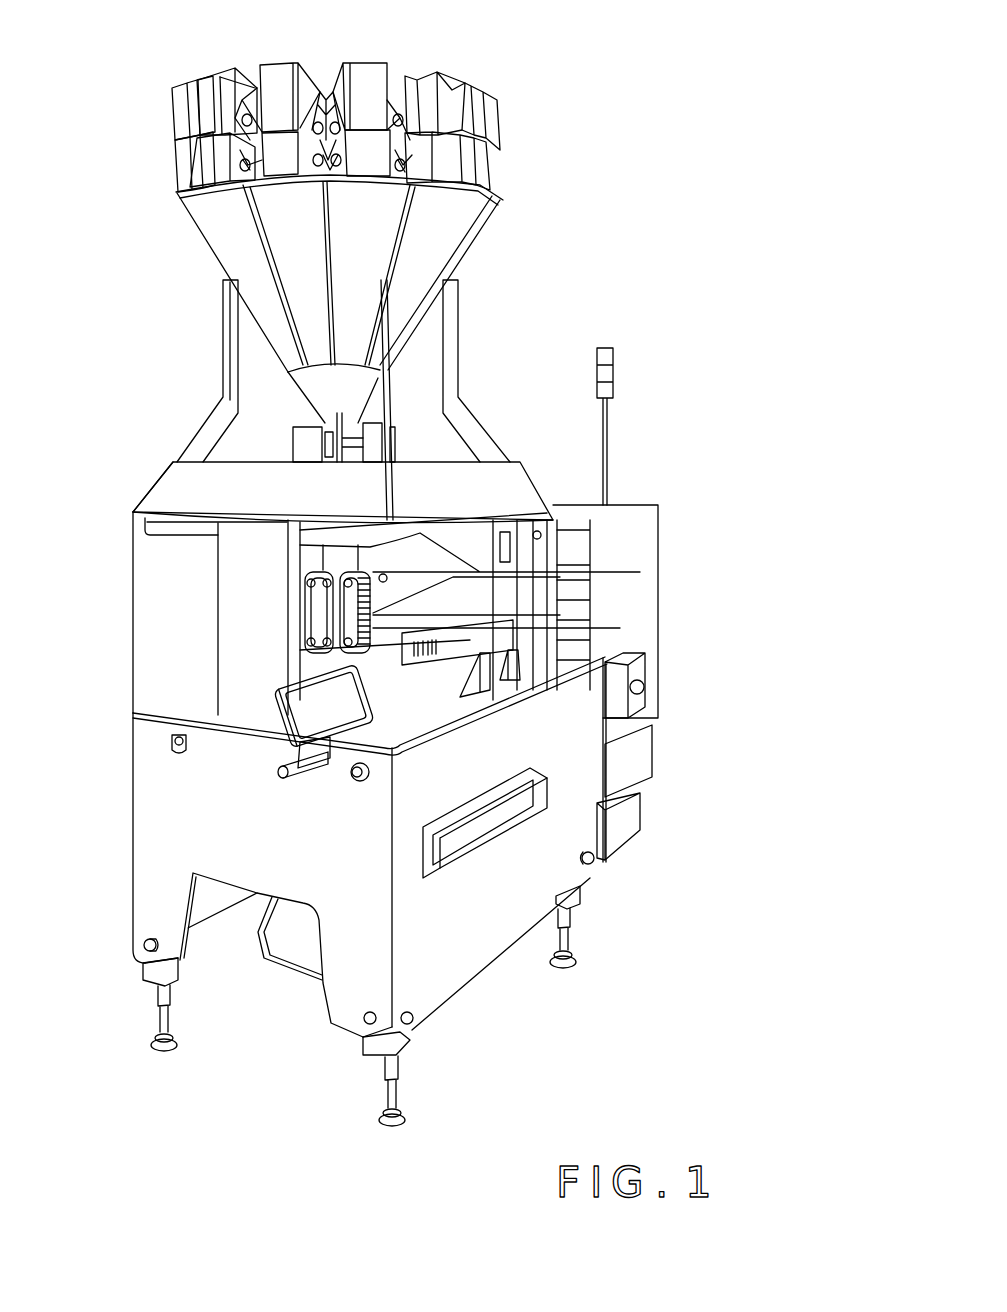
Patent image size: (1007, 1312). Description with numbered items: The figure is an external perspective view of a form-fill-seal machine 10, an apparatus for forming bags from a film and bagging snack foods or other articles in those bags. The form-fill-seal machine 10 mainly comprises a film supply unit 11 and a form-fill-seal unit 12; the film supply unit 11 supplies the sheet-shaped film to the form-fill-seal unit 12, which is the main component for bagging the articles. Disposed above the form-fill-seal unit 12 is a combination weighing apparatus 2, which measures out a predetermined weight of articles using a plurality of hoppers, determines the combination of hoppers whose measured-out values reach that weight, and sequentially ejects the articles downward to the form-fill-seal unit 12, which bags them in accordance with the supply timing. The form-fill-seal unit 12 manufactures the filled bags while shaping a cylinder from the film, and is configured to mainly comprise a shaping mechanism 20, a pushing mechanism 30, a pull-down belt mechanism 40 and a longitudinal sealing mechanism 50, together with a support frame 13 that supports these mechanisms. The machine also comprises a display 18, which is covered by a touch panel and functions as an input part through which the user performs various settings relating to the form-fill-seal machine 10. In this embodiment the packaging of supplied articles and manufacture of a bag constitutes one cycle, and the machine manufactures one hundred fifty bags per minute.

The combination weighing apparatus 2 is at (513, 108).
The pushing mechanism 30 is at (398, 444).
The shaping mechanism 20 is at (303, 556).
The pull-down belt mechanism 40 is at (290, 596).
The longitudinal sealing mechanism 50 is at (318, 628).
The display 18 is at (308, 707).
The form-fill-seal machine 10 is at (679, 792).
The film supply unit 11 is at (635, 758).
The form-fill-seal unit 12 is at (596, 834).
The support frame 13 is at (140, 975).